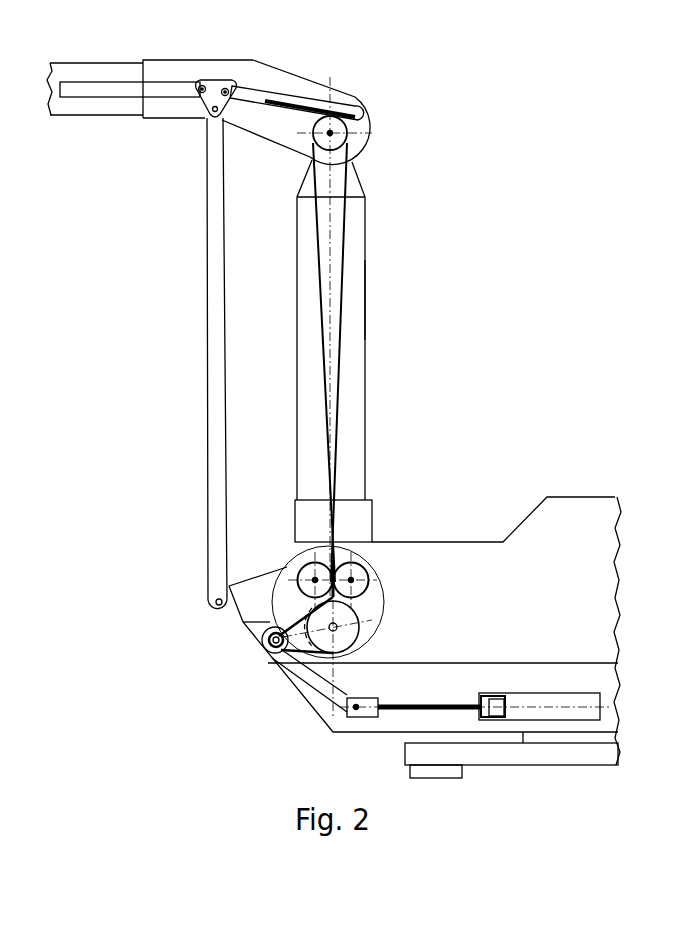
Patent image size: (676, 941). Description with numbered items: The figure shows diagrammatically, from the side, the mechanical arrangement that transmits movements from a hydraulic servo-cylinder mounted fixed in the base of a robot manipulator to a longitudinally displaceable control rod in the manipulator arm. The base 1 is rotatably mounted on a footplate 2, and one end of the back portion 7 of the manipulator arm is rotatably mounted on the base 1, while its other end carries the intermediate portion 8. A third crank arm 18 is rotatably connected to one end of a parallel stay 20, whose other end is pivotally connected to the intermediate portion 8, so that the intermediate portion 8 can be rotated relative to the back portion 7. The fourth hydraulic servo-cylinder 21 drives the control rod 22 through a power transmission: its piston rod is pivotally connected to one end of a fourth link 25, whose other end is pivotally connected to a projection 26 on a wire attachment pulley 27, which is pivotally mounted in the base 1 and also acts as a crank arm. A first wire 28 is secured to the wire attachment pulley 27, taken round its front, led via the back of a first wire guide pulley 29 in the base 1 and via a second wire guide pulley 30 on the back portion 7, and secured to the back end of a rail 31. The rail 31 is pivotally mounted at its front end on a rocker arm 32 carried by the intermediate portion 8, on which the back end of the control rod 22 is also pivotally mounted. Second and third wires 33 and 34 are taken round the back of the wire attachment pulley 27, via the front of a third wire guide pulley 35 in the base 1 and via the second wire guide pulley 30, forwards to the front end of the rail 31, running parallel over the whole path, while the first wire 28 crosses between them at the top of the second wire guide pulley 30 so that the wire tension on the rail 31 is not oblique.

The base 1 is at (433, 542).
The footplate 2 is at (417, 755).
The back portion of the manipulator arm 7 is at (353, 435).
The intermediate portion of the manipulator arm 8 is at (62, 75).
The third crank arm 18 is at (228, 585).
The parallel stay 20 is at (214, 436).
The fourth hydraulic servo-cylinder 21 is at (517, 700).
The longitudinally displaceable control rod 22 is at (78, 92).
The fourth link 25 is at (320, 677).
The projection 26 is at (263, 640).
The wire attachment pulley 27 is at (360, 628).
The first wire 28 is at (317, 273).
The first rotatable wire guide pulley 29 is at (296, 566).
The second rotatable wire guide pulley 30 is at (340, 140).
The rail 31 is at (260, 92).
The rocker arm 32 is at (213, 80).
The second wire 33 is at (367, 303).
The third wire 34 is at (343, 325).
The third rotatable wire guide pulley 35 is at (370, 578).